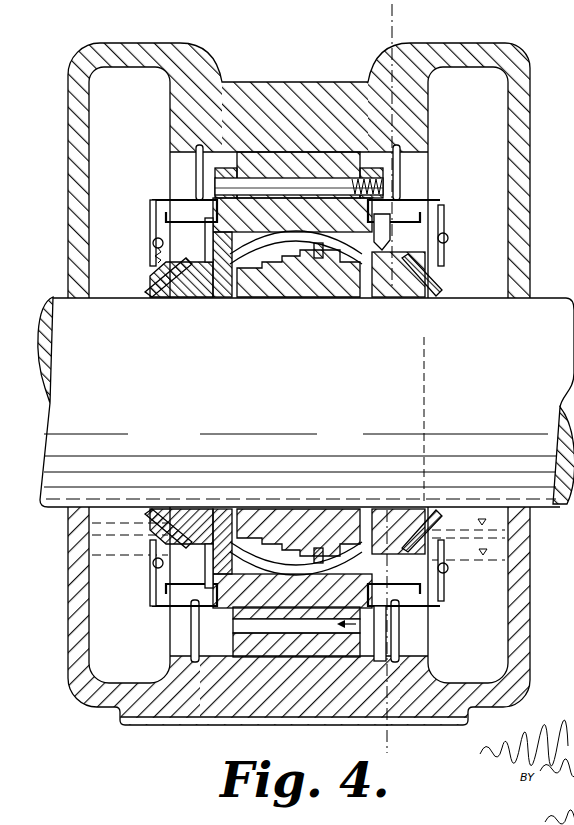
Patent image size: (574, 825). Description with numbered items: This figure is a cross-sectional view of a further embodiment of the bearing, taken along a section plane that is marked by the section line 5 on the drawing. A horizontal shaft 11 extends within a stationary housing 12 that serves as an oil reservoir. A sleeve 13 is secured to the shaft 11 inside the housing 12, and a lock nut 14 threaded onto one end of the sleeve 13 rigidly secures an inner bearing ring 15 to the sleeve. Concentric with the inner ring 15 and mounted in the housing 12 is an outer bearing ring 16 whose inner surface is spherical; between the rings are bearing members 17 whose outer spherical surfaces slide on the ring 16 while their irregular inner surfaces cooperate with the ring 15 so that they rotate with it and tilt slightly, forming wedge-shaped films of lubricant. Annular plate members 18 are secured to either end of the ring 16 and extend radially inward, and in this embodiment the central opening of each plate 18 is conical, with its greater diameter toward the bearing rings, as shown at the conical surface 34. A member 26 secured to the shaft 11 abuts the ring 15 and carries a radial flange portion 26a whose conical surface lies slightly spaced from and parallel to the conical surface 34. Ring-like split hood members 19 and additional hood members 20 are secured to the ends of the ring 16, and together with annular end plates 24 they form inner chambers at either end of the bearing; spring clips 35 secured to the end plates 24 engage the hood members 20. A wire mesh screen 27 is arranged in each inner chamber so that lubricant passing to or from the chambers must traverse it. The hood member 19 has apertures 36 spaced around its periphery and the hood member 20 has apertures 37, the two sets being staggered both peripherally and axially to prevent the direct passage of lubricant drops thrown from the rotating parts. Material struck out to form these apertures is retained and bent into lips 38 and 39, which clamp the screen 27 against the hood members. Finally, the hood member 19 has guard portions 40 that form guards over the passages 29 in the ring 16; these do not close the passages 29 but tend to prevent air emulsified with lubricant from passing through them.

The section line 5- 5 is at (418, 21).
The shaft 11 is at (52, 412).
The housing 12 is at (72, 200).
The sleeve 13 is at (291, 295).
The lock nut 14 is at (393, 293).
The inner bearing ring 15 is at (330, 289).
The outer bearing ring 16 is at (277, 609).
The bearing members 17 is at (296, 247).
The annular plate members 18 is at (223, 170).
The hood members 19 is at (400, 224).
The hood members 20 is at (413, 204).
The annular end plates 24 is at (163, 263).
The member 26 is at (191, 297).
The radial flange portion 26a is at (233, 297).
The wire mesh screen 27 is at (190, 198).
The passages 29 is at (330, 628).
The conical surface 34 is at (210, 240).
The spring clips 35 is at (155, 246).
The apertures 36 is at (445, 232).
The apertures 37 is at (196, 610).
The lips 38 is at (150, 218).
The lips 39 is at (428, 612).
The guard portions 40 is at (400, 652).